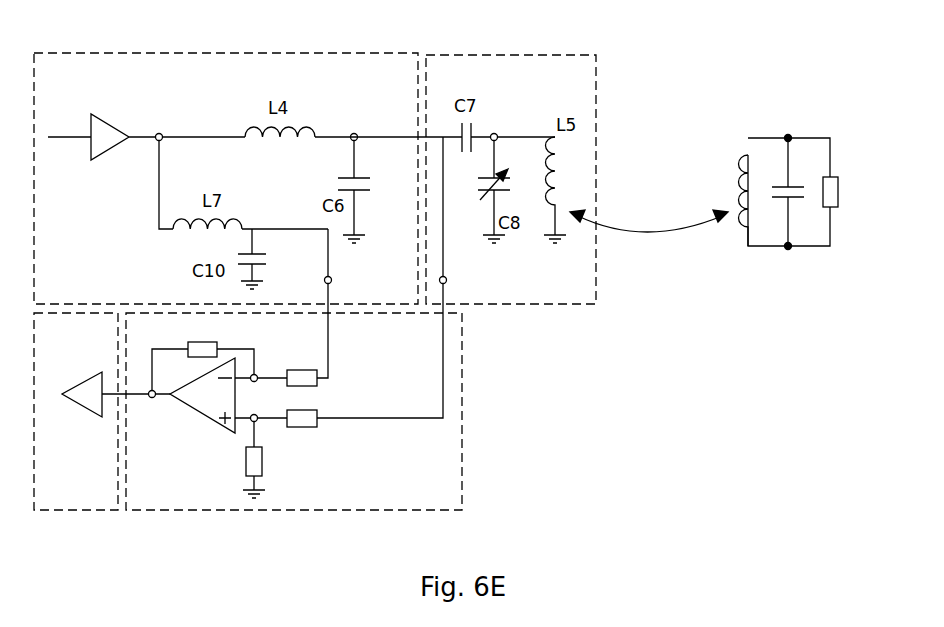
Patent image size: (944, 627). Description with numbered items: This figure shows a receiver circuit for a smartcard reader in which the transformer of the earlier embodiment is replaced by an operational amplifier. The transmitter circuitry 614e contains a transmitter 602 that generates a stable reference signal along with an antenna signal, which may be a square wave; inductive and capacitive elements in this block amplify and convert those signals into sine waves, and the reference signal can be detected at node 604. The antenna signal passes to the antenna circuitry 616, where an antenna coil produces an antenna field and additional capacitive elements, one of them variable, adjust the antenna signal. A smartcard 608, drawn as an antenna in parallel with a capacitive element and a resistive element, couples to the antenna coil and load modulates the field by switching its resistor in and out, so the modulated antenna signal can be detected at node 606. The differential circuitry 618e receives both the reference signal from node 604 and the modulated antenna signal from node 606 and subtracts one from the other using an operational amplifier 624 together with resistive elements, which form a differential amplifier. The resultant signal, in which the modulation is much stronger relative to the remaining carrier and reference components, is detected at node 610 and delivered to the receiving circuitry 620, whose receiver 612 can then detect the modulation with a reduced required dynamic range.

The transmitter 602 is at (118, 131).
The node 604 is at (332, 279).
The node 606 is at (447, 279).
The smartcard 608 is at (812, 138).
The node 610 is at (155, 398).
The receiver 612 is at (85, 405).
The transmitter circuitry 614e is at (268, 53).
The antenna circuitry 616 is at (486, 55).
The differential circuitry 618e is at (465, 403).
The receiving circuitry 620 is at (105, 512).
The operational amplifier 624 is at (174, 357).